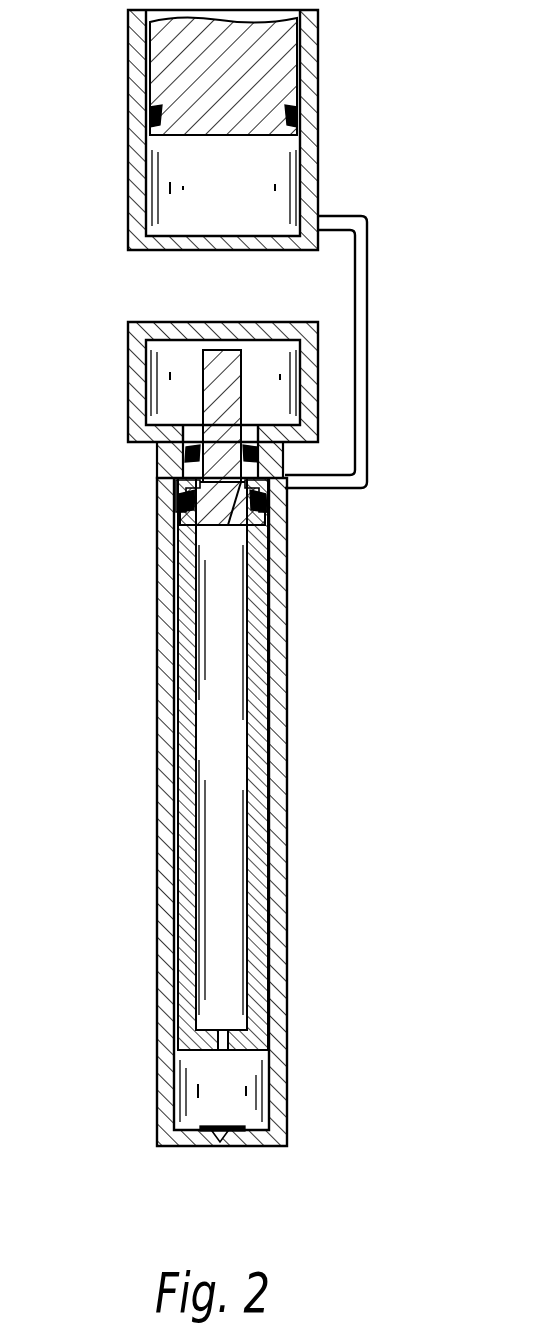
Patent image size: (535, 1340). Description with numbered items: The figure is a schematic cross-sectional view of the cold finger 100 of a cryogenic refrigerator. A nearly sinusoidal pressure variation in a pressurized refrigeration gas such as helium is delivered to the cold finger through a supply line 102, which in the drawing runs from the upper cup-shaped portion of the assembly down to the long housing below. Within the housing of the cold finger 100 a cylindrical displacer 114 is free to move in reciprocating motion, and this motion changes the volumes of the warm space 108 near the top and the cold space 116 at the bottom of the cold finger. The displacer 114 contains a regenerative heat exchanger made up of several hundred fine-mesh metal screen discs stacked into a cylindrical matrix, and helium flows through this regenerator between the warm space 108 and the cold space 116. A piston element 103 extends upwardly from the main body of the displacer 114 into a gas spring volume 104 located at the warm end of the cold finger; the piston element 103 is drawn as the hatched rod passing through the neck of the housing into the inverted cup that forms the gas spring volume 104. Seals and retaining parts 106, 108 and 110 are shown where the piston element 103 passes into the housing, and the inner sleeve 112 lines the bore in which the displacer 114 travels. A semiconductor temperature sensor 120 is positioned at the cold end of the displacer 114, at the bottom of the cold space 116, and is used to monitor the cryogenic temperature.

The cold finger 100 is at (161, 812).
The supply line 102 is at (368, 288).
The piston element 103 is at (225, 365).
The gas spring volume 104 is at (177, 372).
The rod seal 106 is at (187, 450).
The warm space 108 is at (178, 480).
The piston seal 110 is at (160, 508).
The inner cylinder sleeve 112 is at (228, 748).
The cylindrical displacer 114 is at (157, 740).
The cold space 116 is at (235, 1108).
The semiconductor temperature sensor 120 is at (222, 1148).